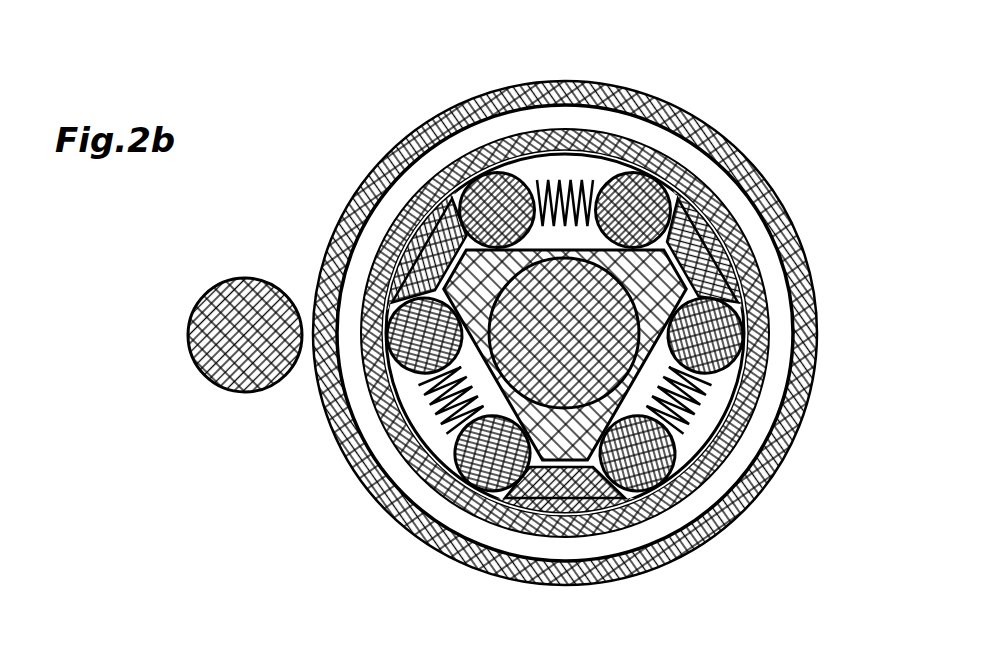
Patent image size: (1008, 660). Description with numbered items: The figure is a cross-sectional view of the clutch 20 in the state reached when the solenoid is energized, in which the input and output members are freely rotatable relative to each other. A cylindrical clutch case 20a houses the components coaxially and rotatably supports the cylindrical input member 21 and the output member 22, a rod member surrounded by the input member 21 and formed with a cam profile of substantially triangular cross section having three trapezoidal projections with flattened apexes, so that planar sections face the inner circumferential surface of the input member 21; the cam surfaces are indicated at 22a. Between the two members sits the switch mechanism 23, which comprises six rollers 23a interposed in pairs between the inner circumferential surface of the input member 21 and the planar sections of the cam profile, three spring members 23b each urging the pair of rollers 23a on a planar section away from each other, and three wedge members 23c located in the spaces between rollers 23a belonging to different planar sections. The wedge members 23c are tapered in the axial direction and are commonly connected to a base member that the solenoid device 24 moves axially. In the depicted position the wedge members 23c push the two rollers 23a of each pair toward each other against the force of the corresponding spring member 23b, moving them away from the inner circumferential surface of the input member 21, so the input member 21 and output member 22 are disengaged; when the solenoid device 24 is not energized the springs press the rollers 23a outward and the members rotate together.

The clutch 20 is at (358, 90).
The clutch case 20a is at (347, 217).
The input member 21 is at (487, 150).
The output member 22 is at (676, 285).
The cam 22a is at (670, 245).
The switch mechanism 23 is at (405, 213).
The rollers 23a is at (507, 190).
The spring members 23b is at (574, 178).
The wedge members 23c is at (421, 222).
The solenoid device 24 is at (262, 293).